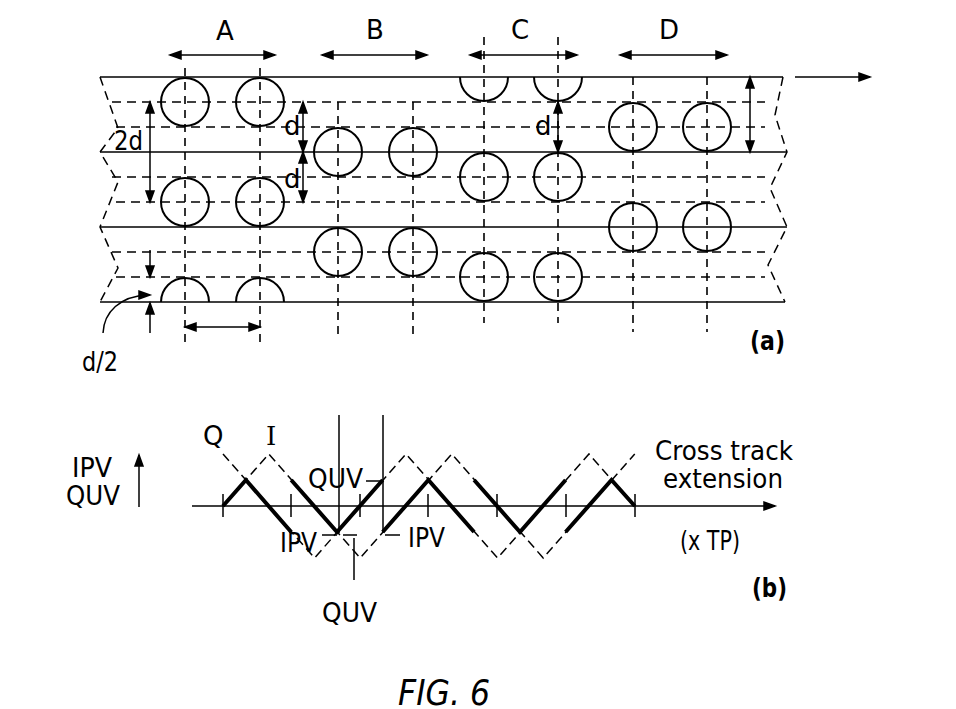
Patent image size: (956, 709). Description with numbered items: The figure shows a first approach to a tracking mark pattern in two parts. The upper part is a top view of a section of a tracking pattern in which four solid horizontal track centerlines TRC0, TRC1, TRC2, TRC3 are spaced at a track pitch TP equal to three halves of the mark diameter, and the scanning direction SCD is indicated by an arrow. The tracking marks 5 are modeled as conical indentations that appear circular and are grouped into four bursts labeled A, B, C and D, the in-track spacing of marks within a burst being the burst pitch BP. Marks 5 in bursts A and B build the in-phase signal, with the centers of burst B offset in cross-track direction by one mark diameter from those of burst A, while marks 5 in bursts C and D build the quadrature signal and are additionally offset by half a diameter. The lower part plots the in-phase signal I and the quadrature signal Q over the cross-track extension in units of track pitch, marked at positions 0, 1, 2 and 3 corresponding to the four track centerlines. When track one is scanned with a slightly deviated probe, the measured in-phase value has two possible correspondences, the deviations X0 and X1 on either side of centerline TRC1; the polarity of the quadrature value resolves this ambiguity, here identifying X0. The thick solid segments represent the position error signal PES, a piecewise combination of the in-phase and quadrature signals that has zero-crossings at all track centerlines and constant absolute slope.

The tracking mark 5 is at (717, 100).
The track centerline zero TRC0 is at (405, 79).
The track centerline one TRC1 is at (407, 154).
The track centerline two TRC2 is at (407, 234).
The track centerline three TRC3 is at (406, 312).
The track pitch TP is at (770, 114).
The burst pitch BP is at (222, 343).
The scanning direction SCD is at (832, 55).
The deviation x0 X0 is at (777, 138).
The deviation x1 X1 is at (770, 164).
The position error signal PES is at (402, 497).
The cross-track position zero 0 is at (223, 526).
The cross-track position one 1 is at (364, 525).
The cross-track position two 2 is at (501, 528).
The cross-track position three 3 is at (638, 526).